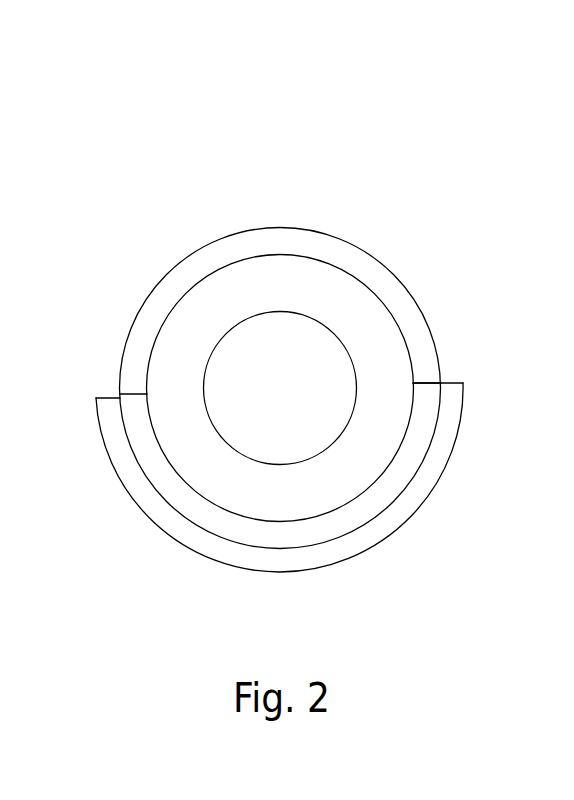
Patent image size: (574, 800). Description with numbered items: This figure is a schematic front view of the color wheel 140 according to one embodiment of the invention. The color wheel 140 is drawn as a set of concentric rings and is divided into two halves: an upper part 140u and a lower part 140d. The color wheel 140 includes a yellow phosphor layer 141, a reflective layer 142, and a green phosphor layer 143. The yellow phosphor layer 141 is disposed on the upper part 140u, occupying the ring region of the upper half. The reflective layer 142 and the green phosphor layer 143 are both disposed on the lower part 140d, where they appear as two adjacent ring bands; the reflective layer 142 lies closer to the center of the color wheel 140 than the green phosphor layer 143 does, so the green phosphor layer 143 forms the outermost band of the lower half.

The color wheel 140 is at (88, 58).
The yellow phosphor layer 141 is at (275, 233).
The upper part 140u is at (208, 292).
The lower part 140d is at (177, 457).
The reflective layer 142 is at (428, 390).
The green phosphor layer 143 is at (455, 392).